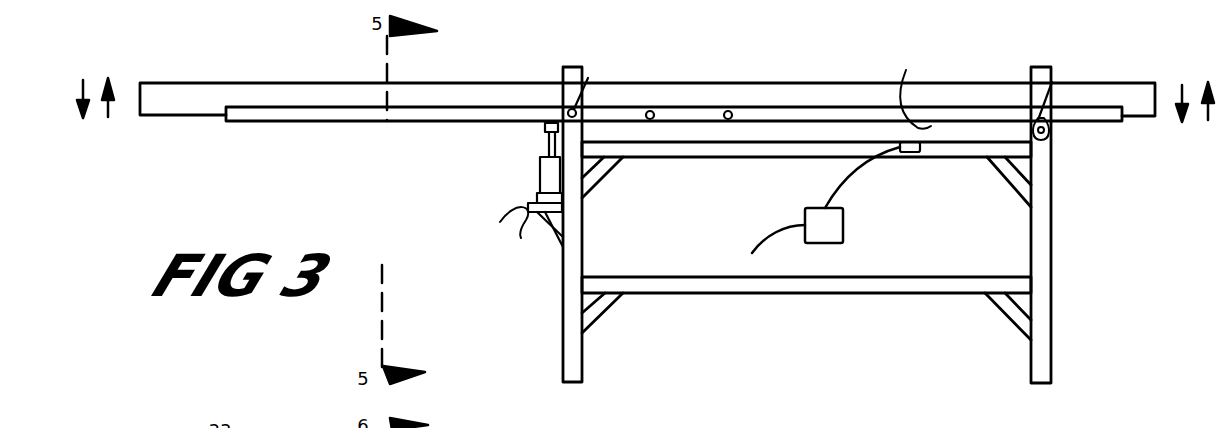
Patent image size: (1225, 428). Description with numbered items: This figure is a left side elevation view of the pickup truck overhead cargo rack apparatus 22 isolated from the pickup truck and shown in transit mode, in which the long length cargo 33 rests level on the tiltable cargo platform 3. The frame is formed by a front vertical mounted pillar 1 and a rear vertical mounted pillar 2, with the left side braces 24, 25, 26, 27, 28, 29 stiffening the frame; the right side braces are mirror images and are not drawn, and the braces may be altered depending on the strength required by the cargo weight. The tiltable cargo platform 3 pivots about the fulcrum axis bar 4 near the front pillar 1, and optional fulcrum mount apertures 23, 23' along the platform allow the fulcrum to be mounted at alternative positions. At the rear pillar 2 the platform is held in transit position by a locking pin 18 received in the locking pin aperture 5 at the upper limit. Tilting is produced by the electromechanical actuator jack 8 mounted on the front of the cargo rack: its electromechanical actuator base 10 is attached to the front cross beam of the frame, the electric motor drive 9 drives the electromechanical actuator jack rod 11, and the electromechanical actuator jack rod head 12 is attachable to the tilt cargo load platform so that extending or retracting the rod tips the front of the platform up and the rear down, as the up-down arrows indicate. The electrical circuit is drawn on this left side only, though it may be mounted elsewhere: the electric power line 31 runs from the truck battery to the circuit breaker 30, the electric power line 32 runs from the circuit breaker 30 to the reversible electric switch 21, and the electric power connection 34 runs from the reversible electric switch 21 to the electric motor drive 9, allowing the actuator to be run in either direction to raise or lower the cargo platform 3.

The front vertical mounted pillar 1 is at (573, 67).
The rear vertical mounted pillar 2 is at (1043, 68).
The tiltable cargo platform 3 is at (300, 115).
The fulcrum axis bar 4 is at (588, 88).
The locking pin aperture 5 is at (1053, 88).
The electromechanical actuator jack 8 is at (548, 175).
The electric motor drive 9 is at (540, 196).
The electromechanical actuator base 10 is at (538, 214).
The electromechanical actuator jack rod 11 is at (551, 143).
The electromechanical actuator jack rod head 12 is at (545, 126).
The locking pin 18 is at (1050, 146).
The reversible electric switch 21 is at (911, 153).
The pickup truck overhead cargo rack apparatus 22 is at (877, 201).
The optional fulcrum mount aperture 23 is at (672, 86).
The optional fulcrum mount aperture 23' is at (748, 86).
The left side brace 24 is at (762, 293).
The left side brace 25 is at (704, 160).
The left side brace 26 is at (600, 176).
The left side brace 27 is at (1013, 188).
The left side brace 28 is at (1004, 312).
The left side brace 29 is at (605, 308).
The circuit breaker 30 is at (842, 240).
The electric power line 31 is at (758, 245).
The electric power line 32 is at (842, 186).
The long length cargo 33 is at (200, 92).
The electric power connection 34 is at (704, 146).